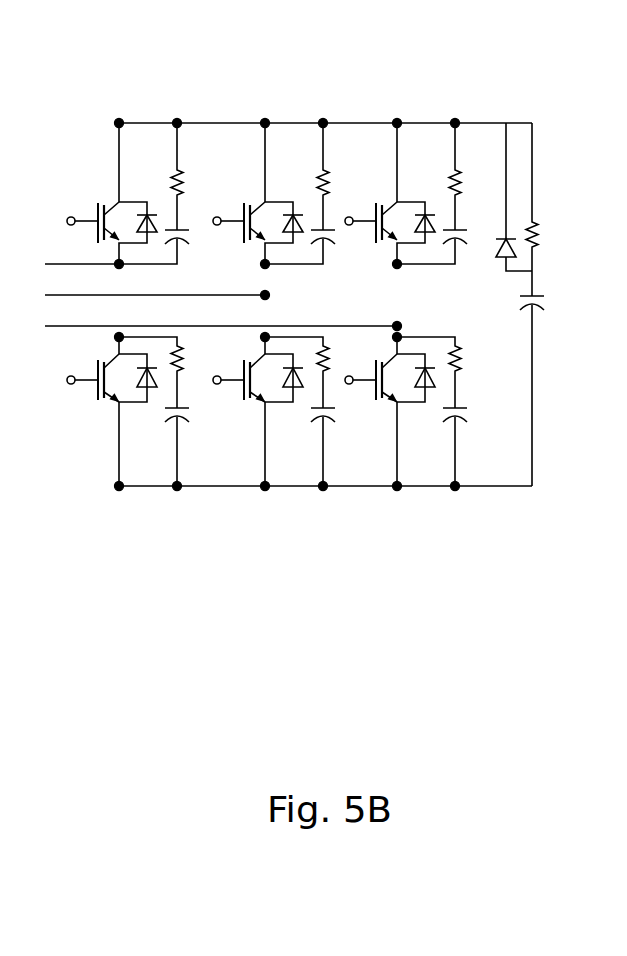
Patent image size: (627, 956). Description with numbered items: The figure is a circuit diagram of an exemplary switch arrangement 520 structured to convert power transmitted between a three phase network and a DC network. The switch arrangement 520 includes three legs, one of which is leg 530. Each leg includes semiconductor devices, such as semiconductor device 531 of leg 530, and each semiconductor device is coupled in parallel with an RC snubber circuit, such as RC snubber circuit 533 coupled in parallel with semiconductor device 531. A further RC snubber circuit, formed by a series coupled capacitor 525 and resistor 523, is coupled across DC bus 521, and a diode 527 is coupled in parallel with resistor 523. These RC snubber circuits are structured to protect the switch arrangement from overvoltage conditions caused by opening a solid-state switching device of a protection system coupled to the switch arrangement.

The switch arrangement 520 is at (328, 263).
The DC bus 521 is at (359, 115).
The resistor 523 is at (544, 232).
The capacitor 525 is at (545, 302).
The diode 527 is at (503, 263).
The leg 530 is at (145, 180).
The semiconductor device 531 is at (92, 215).
The RC snubber circuit 533 is at (190, 175).